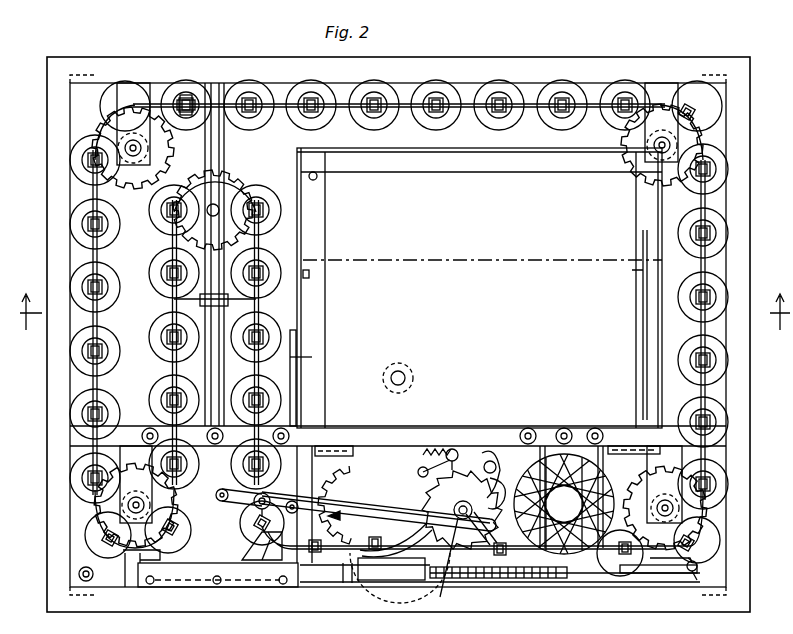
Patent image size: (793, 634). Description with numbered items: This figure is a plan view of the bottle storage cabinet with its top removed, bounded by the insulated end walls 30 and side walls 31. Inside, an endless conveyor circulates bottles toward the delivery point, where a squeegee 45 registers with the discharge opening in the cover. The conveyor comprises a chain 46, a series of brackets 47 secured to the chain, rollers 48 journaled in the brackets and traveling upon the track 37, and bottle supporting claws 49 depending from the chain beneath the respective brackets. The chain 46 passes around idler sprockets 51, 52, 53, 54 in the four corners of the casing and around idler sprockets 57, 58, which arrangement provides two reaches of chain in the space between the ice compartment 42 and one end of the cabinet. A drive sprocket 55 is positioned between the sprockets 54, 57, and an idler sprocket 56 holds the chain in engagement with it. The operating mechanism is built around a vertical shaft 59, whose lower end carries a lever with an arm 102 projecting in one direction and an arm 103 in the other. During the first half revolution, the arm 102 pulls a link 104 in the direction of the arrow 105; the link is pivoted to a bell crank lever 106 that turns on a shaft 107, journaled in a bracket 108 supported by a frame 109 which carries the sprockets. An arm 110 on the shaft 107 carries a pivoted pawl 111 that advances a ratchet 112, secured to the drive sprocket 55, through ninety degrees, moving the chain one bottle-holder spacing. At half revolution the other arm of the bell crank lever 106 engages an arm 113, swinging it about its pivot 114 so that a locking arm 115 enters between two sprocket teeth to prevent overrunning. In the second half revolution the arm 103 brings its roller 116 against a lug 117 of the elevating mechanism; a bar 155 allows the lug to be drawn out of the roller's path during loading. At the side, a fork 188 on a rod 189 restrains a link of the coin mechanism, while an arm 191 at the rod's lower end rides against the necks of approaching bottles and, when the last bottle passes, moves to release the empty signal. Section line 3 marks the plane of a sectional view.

The section line 3 is at (399, 312).
The end walls 30 is at (52, 214).
The side walls 31 is at (497, 67).
The track 37 is at (270, 85).
The ice compartment 42 is at (325, 165).
The squeegee 45 is at (578, 455).
The chain 46 is at (468, 114).
The brackets 47 is at (190, 98).
The rollers 48 is at (186, 95).
The bottle supporting claws 49 is at (175, 96).
The idler sprocket 51 is at (105, 505).
The idler sprocket 52 is at (105, 137).
The idler sprocket 53 is at (692, 146).
The idler sprocket 54 is at (692, 513).
The drive sprocket 55 is at (514, 578).
The idler sprocket 56 is at (418, 530).
The idler sprocket 57 is at (318, 480).
The idler sprocket 58 is at (232, 190).
The vertical shaft 59 is at (252, 524).
The arm 102 is at (274, 498).
The arm 103 is at (258, 512).
The link 104 is at (400, 508).
The arrow 105 is at (388, 497).
The bell crank lever 106 is at (478, 520).
The shaft 107 is at (458, 522).
The bracket 108 is at (436, 494).
The frame 109 is at (572, 408).
The arm 110 is at (465, 500).
The pawl 111 is at (492, 460).
The ratchet 112 is at (508, 488).
The arm 113 is at (420, 476).
The pivot 114 is at (450, 449).
The locking arm 115 is at (424, 462).
The roller 116 is at (222, 488).
The lug 117 is at (258, 560).
The bar 155 is at (250, 548).
The fork 188 is at (694, 578).
The rod 189 is at (692, 550).
The arm 191 is at (630, 574).